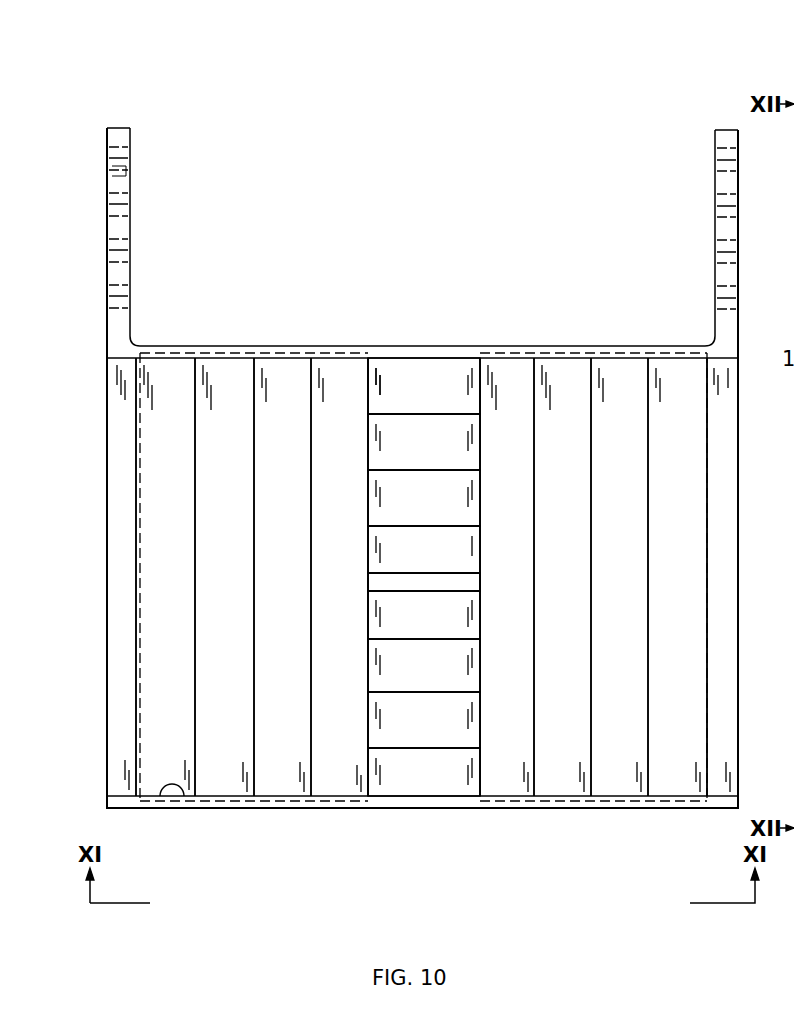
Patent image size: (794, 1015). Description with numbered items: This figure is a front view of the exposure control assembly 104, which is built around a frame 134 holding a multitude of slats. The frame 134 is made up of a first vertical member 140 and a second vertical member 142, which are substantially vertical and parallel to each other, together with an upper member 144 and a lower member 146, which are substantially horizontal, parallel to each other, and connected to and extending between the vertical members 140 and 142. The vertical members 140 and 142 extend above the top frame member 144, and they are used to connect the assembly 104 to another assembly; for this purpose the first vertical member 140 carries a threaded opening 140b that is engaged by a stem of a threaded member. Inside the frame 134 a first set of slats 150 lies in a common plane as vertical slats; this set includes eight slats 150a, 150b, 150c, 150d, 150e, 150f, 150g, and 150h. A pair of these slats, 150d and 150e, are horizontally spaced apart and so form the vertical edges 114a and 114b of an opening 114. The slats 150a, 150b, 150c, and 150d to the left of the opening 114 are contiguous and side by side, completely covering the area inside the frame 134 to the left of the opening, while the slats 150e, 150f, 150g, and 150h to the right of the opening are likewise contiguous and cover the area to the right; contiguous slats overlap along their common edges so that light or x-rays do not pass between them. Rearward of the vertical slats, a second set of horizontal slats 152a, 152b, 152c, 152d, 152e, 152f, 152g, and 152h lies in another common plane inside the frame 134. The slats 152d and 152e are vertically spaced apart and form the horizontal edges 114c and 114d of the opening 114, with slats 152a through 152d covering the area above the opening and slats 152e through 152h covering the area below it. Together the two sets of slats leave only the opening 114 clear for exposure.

The exposure control assembly 104 is at (200, 100).
The frame 134 is at (293, 298).
The first vertical member 140 is at (118, 419).
The threaded opening 140b is at (128, 177).
The second vertical member 142 is at (730, 490).
The upper member 144 is at (416, 350).
The lower member 146 is at (161, 790).
The first set of slats 150 is at (256, 318).
The vertical slat 150a is at (173, 370).
The vertical slat 150b is at (222, 365).
The vertical slat 150c is at (300, 366).
The vertical slat 150d is at (345, 366).
The vertical slat 150e is at (511, 368).
The vertical slat 150f is at (556, 368).
The vertical slat 150g is at (622, 368).
The vertical slat 150h is at (681, 368).
The horizontal slat 152a is at (424, 386).
The horizontal slat 152b is at (424, 442).
The horizontal slat 152c is at (424, 498).
The horizontal slat 152d is at (424, 549).
The horizontal slat 152e is at (424, 615).
The horizontal slat 152f is at (424, 665).
The horizontal slat 152g is at (424, 720).
The horizontal slat 152h is at (424, 772).
The opening 114 is at (457, 583).
The vertical edge of opening 114a is at (368, 582).
The vertical edge of opening 114b is at (478, 582).
The horizontal edge of opening 114c is at (465, 572).
The horizontal edge of opening 114d is at (386, 592).